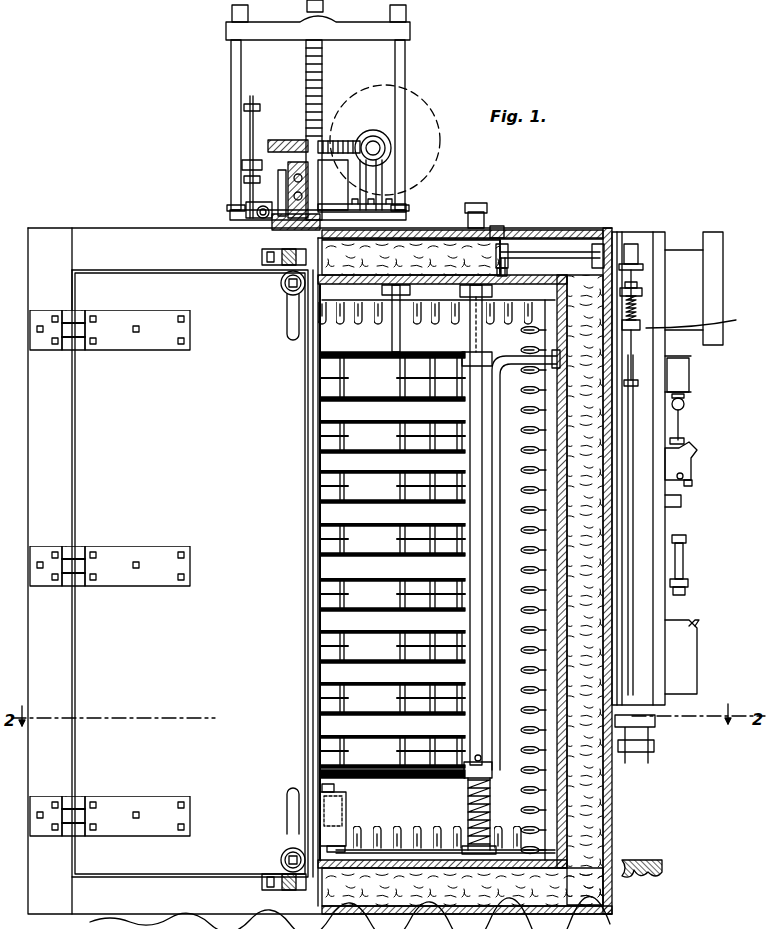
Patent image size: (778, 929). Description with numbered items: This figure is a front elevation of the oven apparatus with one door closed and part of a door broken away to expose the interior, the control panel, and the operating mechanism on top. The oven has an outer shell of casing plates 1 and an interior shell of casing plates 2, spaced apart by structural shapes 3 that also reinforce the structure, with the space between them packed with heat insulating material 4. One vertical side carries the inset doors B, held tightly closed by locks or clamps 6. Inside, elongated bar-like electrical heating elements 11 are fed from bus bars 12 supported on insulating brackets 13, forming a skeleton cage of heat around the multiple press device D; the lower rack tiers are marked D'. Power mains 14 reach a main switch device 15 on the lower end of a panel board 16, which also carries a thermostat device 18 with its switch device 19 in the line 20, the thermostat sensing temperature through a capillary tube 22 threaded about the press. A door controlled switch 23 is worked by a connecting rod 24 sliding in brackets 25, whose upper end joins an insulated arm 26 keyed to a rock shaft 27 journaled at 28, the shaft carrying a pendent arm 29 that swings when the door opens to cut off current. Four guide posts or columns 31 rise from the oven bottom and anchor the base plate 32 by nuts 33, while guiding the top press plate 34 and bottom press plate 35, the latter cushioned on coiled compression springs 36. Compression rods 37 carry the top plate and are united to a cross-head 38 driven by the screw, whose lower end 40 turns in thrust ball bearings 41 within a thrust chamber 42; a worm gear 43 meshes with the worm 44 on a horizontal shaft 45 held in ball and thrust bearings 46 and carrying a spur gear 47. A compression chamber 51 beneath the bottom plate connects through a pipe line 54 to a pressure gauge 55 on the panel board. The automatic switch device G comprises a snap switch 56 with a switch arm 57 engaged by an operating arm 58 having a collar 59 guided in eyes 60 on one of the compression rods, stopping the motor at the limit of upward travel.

The casing plates 1 is at (623, 739).
The interior casing plates 2 is at (569, 825).
The structural shapes 3 is at (508, 262).
The heat insulating material 4 is at (589, 806).
The locks or clamps 6 is at (290, 320).
The electrical heating elements 11 is at (524, 742).
The bus bars 12 is at (488, 824).
The insulating brackets 13 is at (676, 554).
The power mains 14 is at (638, 846).
The main switch device 15 is at (676, 664).
The panel board 16 is at (660, 430).
The thermostat device 18 is at (713, 296).
The switch device 19 is at (686, 468).
The line 20 is at (652, 344).
The capillary tube 22 is at (368, 374).
The door controlled switch 23 is at (672, 406).
The connecting rod 24 is at (652, 364).
The brackets 25 is at (635, 284).
The arm 26 is at (632, 256).
The rock shaft 27 is at (556, 252).
The journal 28 is at (508, 252).
The pendent arm 29 is at (510, 268).
The guide posts or columns 31 is at (470, 340).
The base plate 32 is at (496, 226).
The nuts 33 is at (478, 218).
The top press plate 34 is at (410, 370).
The bottom press plate 35 is at (371, 774).
The coiled compression springs 36 is at (486, 778).
The compression rods 37 is at (240, 82).
The cross-head 38 is at (408, 26).
The lower end of screw 40 is at (325, 138).
The thrust ball bearings 41 is at (282, 222).
The thrust chamber 42 is at (336, 185).
The worm gear 43 is at (268, 143).
The worm 44 is at (375, 134).
The horizontal shaft 45 is at (378, 148).
The ball and thrust bearings 46 is at (376, 196).
The spur gear 47 is at (408, 122).
The compression chamber 51 is at (340, 816).
The pipe line 54 is at (630, 768).
The pressure gauge 55 is at (676, 382).
The snap switch 56 is at (290, 200).
The switch arm 57 is at (248, 210).
The operating arm 58 is at (250, 148).
The collar 59 is at (248, 166).
The guide eyes 60 is at (254, 107).
The doors B is at (131, 421).
The multiple press device D is at (392, 366).
The racks D' is at (392, 567).
The automatic switch device G is at (268, 120).